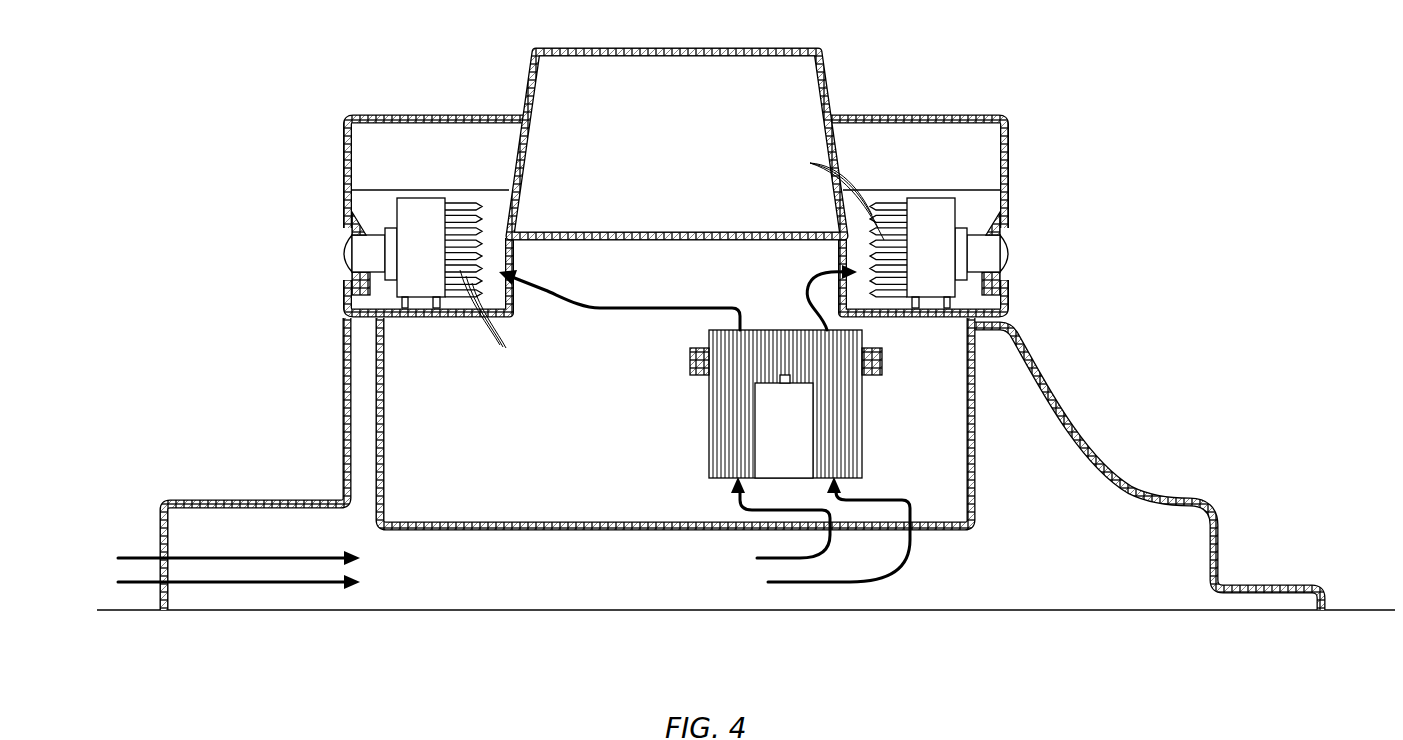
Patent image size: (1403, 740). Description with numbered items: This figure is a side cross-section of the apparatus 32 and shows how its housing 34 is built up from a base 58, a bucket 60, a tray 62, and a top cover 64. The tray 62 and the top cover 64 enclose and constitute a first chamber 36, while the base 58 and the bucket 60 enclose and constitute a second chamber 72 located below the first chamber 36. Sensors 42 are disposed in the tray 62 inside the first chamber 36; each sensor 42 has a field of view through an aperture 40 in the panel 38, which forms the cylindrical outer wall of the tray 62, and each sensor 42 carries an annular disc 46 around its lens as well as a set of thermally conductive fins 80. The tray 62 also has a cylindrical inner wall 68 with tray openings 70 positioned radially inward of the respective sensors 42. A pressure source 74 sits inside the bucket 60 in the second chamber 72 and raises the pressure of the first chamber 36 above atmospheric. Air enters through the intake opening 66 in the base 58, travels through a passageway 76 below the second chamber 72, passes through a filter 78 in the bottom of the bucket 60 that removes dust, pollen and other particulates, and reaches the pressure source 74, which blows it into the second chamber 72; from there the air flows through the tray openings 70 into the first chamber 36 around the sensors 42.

The apparatus 32 is at (1212, 52).
The housing 34 is at (1210, 497).
The first chamber 36 is at (425, 140).
The panel 38 is at (345, 300).
The aperture 40 is at (345, 277).
The sensor 42 is at (420, 198).
The annular disc 46 is at (358, 222).
The base 58 is at (1083, 458).
The bucket 60 is at (976, 447).
The tray 62 is at (440, 320).
The top cover 64 is at (1004, 117).
The intake opening 66 is at (114, 594).
The inner wall 68 is at (512, 152).
The tray opening 70 is at (512, 308).
The second chamber 72 is at (523, 462).
The pressure source 74 is at (862, 405).
The passageway 76 is at (580, 583).
The filter 78 is at (945, 530).
The fins 80 is at (498, 346).